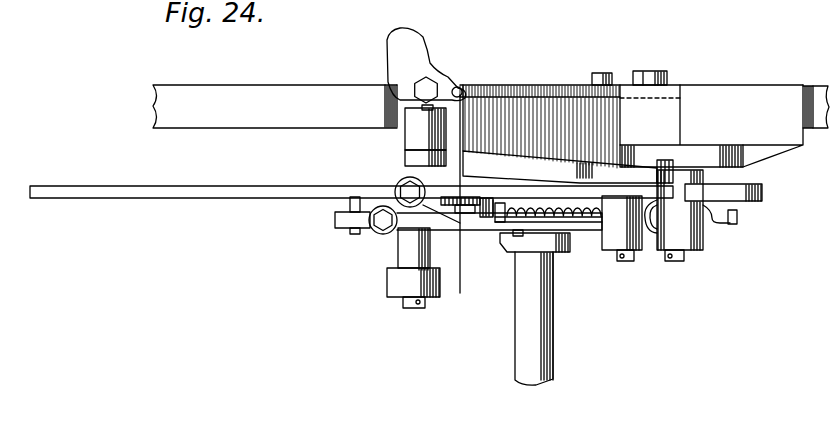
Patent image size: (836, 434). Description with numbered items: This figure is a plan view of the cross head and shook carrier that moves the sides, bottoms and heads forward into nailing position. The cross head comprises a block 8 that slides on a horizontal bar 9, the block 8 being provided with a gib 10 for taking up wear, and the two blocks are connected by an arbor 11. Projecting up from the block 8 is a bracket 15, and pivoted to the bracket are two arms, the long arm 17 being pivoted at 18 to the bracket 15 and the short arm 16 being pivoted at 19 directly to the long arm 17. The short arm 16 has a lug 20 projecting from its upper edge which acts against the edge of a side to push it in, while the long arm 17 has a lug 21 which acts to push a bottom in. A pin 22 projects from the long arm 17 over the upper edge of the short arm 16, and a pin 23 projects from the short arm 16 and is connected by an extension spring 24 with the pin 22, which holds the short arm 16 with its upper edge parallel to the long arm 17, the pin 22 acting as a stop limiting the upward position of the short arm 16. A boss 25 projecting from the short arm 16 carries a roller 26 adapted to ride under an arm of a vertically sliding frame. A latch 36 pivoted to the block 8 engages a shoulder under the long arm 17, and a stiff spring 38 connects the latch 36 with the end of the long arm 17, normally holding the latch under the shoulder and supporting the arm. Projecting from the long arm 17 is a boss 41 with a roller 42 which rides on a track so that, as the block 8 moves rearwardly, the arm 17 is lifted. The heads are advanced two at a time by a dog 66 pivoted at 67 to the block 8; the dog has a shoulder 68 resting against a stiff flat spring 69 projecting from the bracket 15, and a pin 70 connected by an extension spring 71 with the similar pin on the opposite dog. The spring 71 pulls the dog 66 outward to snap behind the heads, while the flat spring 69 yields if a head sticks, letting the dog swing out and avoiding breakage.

The block 8 is at (697, 119).
The horizontal bar 9 is at (827, 83).
The gib 10 is at (392, 90).
The arbor 11 is at (545, 323).
The bracket 15 is at (715, 100).
The short arm 16 is at (581, 225).
The long arm 17 is at (262, 193).
The pivot 18 is at (690, 256).
The pivot 19 is at (636, 261).
The lug 20 is at (378, 233).
The lug 21 is at (412, 196).
The pin 22 is at (500, 206).
The pin 23 is at (483, 217).
The extension spring 24 is at (492, 216).
The boss 25 is at (408, 247).
The roller 26 is at (402, 283).
The latch 36 is at (494, 141).
The spring 38 is at (658, 233).
The boss 41 is at (418, 168).
The roller 42 is at (415, 138).
The dog 66 is at (426, 69).
The pivot 67 is at (424, 90).
The shoulder 68 is at (463, 86).
The flat spring 69 is at (522, 102).
The pin 70 is at (459, 90).
The extension spring 71 is at (456, 292).